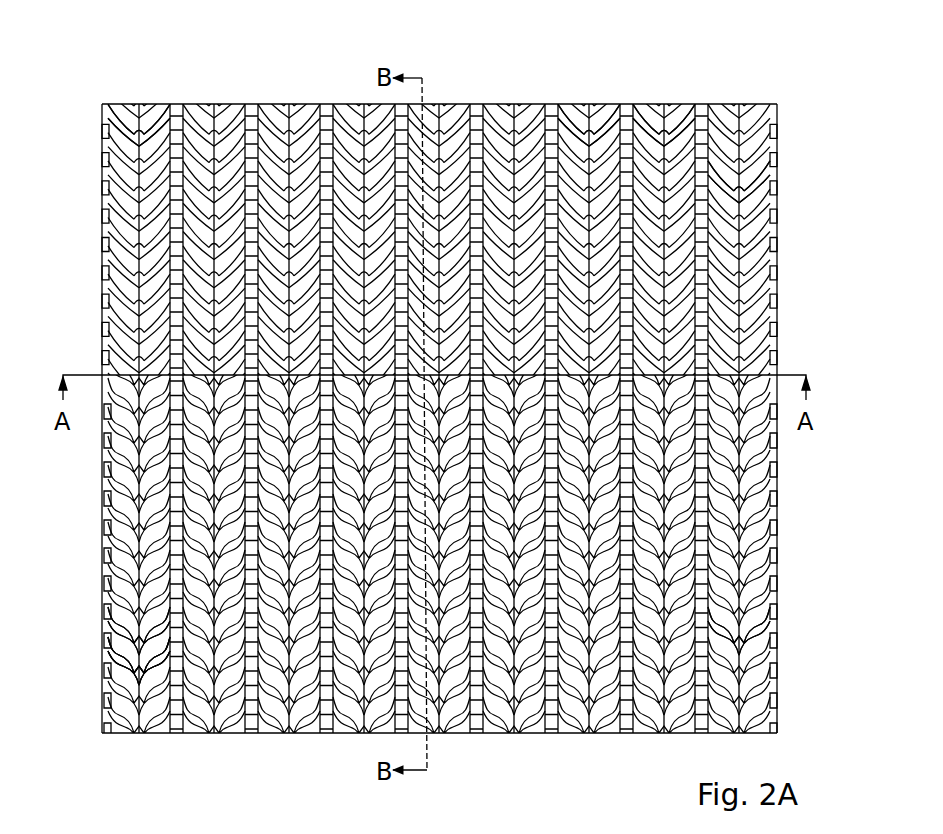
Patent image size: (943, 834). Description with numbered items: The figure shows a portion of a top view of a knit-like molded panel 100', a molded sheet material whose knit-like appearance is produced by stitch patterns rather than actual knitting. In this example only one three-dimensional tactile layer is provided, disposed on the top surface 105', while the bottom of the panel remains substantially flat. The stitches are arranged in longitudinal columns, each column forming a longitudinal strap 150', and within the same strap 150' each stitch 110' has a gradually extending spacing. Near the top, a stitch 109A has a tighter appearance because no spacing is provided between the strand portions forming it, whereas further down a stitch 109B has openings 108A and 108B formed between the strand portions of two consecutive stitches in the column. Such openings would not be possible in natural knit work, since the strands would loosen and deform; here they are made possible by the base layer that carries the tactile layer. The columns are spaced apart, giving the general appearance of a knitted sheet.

The knit-like molded panel 100' is at (463, 376).
The top surface 105' is at (770, 174).
The opening 108A is at (128, 662).
The opening 108B is at (162, 662).
The stitch 109A is at (127, 129).
The stitch 109B is at (136, 640).
The stitch 110' is at (776, 631).
The longitudinal strap 150' is at (638, 92).